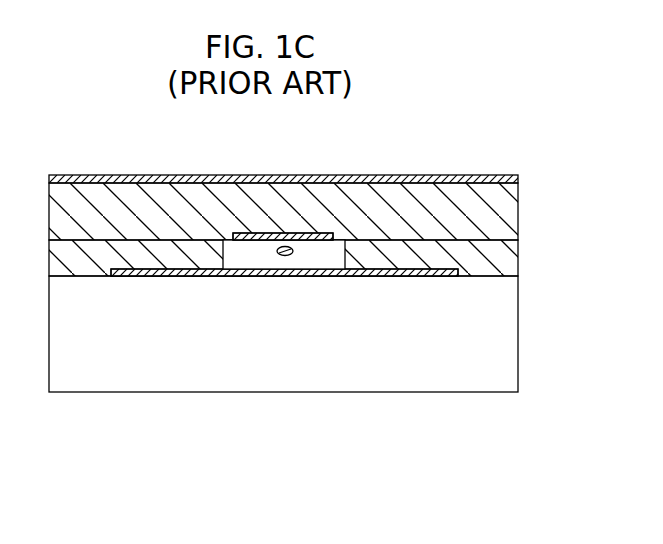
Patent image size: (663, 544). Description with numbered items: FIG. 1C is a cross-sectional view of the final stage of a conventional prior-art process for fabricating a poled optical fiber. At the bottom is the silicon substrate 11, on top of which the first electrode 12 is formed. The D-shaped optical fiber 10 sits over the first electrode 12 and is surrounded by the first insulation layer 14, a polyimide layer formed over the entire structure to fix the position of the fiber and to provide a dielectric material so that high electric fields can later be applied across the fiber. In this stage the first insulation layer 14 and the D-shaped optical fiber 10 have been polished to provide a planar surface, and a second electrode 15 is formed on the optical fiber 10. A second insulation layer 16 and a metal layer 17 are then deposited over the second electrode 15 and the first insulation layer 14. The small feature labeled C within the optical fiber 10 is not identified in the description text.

The D-shaped optical fiber 10 is at (250, 250).
The crack C is at (282, 247).
The second electrode 15 is at (325, 237).
The first electrode 12 is at (432, 273).
The metal layer 17 is at (518, 179).
The second insulation layer 16 is at (518, 223).
The first insulation layer 14 is at (518, 259).
The silicon substrate 11 is at (518, 328).